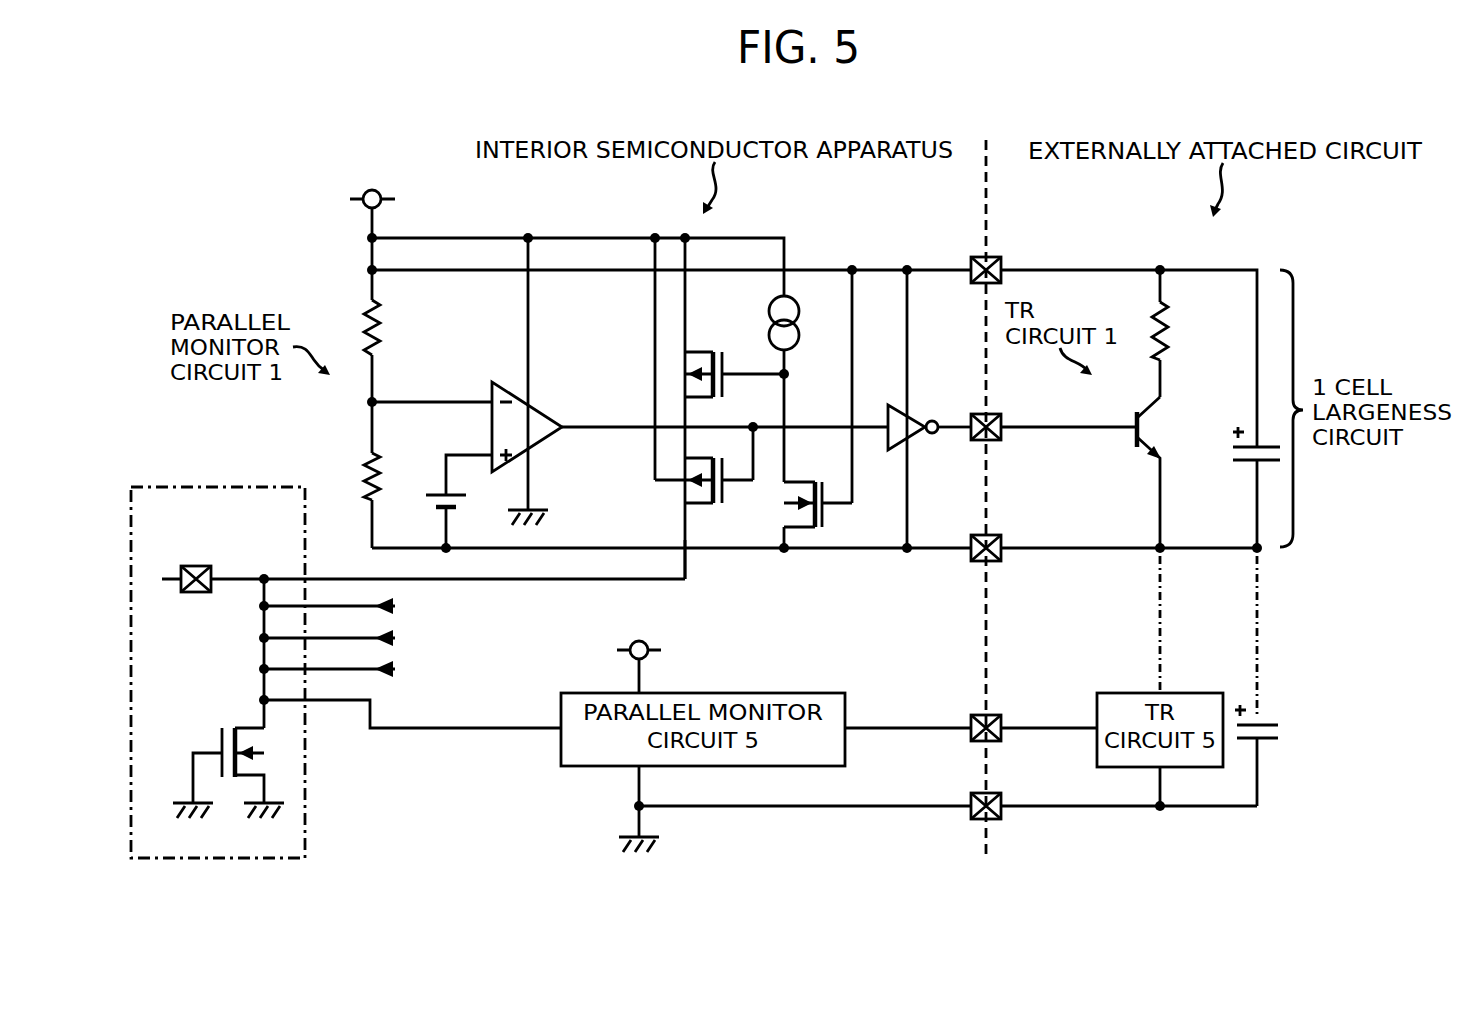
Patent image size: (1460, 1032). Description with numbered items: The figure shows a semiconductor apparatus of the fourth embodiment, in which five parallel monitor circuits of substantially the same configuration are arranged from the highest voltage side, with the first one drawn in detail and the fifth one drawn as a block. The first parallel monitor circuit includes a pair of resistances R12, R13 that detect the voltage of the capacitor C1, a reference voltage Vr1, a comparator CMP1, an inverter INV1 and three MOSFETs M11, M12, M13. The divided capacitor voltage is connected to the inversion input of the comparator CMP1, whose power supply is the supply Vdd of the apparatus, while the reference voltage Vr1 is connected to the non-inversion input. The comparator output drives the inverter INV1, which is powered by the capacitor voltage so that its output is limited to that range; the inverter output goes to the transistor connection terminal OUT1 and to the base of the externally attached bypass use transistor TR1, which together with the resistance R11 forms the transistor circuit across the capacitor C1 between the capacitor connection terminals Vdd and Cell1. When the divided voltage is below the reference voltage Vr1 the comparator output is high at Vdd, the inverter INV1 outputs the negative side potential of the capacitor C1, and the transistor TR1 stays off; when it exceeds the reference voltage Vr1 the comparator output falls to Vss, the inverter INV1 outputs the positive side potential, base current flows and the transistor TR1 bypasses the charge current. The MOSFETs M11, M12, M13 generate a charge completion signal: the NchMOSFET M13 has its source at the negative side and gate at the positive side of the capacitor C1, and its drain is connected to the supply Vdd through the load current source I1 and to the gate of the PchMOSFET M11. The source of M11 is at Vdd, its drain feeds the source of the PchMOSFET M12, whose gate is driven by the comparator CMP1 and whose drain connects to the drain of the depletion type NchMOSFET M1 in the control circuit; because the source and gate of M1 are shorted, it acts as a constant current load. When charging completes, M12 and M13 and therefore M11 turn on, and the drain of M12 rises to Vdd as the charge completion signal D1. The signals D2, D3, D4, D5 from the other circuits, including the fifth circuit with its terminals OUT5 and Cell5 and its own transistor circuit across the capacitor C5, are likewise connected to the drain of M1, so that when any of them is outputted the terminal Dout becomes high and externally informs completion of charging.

The power supply Vdd is at (677, 440).
The resistance R12 is at (398, 327).
The resistance R13 is at (348, 476).
The comparator CMP1 is at (547, 442).
The reference voltage Vr1 is at (447, 501).
The PchMOSFET M11 is at (734, 361).
The PchMOSFET M12 is at (704, 494).
The NchMOSFET M13 is at (818, 491).
The current source I1 is at (798, 323).
The charge completion signal D1 is at (685, 534).
The inverter INV1 is at (929, 423).
The transistor connection terminal OUT1 is at (1054, 420).
The capacitor connection terminal Cell1 is at (1114, 541).
The resistance R11 is at (1129, 358).
The bypass use transistor TR1 is at (1135, 468).
The capacitor C1 is at (1241, 487).
The terminal Dout is at (421, 565).
The charge completion signal D2 is at (349, 606).
The charge completion signal D3 is at (349, 638).
The charge completion signal D4 is at (349, 669).
The charge completion signal D5 is at (412, 714).
The depletion type NchMOSFET M1 is at (228, 758).
The low level supply Vss is at (617, 809).
The transistor connection terminal OUT5 is at (1034, 721).
The capacitor connection terminal Cell5 is at (1114, 809).
The capacitor C5 is at (1274, 755).